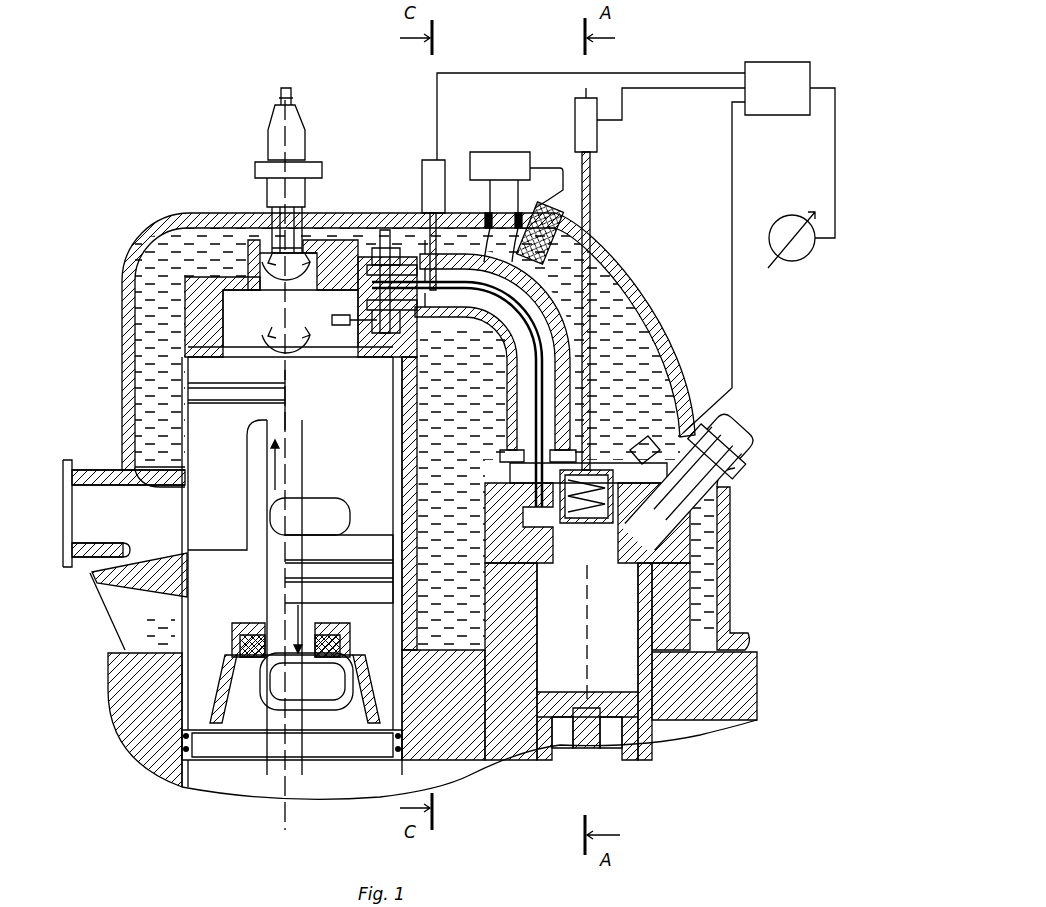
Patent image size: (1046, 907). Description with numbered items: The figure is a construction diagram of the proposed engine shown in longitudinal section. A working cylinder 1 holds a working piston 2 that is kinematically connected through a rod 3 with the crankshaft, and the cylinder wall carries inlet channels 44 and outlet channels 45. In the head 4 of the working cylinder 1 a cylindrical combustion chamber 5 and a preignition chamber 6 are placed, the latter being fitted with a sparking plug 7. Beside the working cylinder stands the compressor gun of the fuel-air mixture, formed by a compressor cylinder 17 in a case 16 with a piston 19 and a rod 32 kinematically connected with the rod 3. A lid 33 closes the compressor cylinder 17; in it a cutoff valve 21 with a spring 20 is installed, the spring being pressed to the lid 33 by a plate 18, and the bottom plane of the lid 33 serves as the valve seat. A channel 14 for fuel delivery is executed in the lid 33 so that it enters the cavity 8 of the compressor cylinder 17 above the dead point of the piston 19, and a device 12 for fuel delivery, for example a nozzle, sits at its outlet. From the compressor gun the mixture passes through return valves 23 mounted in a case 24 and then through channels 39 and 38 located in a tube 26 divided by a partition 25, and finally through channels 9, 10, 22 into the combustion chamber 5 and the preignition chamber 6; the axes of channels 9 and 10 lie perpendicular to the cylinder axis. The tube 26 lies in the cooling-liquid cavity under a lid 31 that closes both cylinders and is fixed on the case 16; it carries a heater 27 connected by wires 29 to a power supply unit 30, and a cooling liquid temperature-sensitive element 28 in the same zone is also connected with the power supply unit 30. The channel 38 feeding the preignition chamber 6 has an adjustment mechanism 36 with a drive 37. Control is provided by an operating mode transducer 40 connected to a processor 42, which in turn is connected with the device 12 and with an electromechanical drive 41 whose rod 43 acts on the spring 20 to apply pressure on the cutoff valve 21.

The working cylinder 1 is at (182, 402).
The working piston 2 is at (313, 547).
The rod 3 is at (280, 775).
The head 4 is at (200, 293).
The combustion chamber 5 is at (255, 333).
The preignition chamber 6 is at (270, 263).
The sparking plug 7 is at (290, 142).
The cavity 8 is at (605, 642).
The channel 9 is at (327, 253).
The channel 10 is at (350, 313).
The device for fuel delivery 12 is at (717, 445).
The channel 14 is at (637, 555).
The case 16 is at (705, 712).
The compressor cylinder 17 is at (645, 723).
The plate 18 is at (643, 450).
The piston 19 is at (547, 718).
The spring 20 is at (600, 470).
The cutoff valve 21 is at (648, 430).
The channel 22 is at (380, 253).
The return valves 23 is at (382, 267).
The case 24 is at (415, 260).
The partition 25 is at (585, 420).
The tube 26 is at (565, 385).
The heater 27 is at (563, 333).
The cooling liquid temperature-sensitive element 28 is at (550, 247).
The wires 29 is at (532, 257).
The power supply unit 30 is at (482, 165).
The lid 31 is at (182, 217).
The rod 32 is at (592, 733).
The lid 33 is at (678, 527).
The adjustment mechanism 36 is at (440, 277).
The drive 37 is at (432, 180).
The channel 38 is at (597, 300).
The channel 39 is at (548, 300).
The operating mode transducer 40 is at (798, 247).
The drive 41 is at (585, 140).
The processor 42 is at (782, 83).
The rod 43 is at (600, 240).
The inlet channels 44 is at (320, 517).
The outlet channels 45 is at (118, 510).